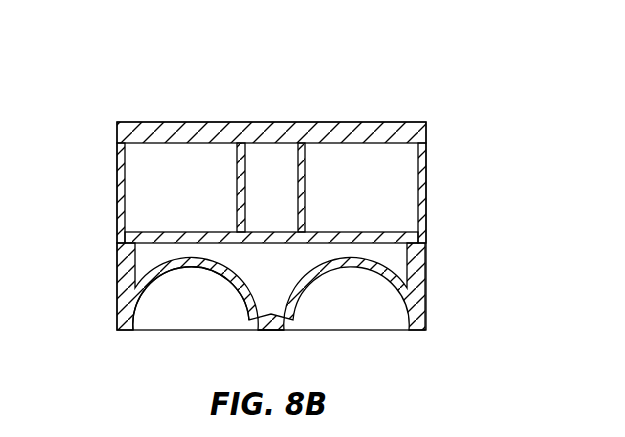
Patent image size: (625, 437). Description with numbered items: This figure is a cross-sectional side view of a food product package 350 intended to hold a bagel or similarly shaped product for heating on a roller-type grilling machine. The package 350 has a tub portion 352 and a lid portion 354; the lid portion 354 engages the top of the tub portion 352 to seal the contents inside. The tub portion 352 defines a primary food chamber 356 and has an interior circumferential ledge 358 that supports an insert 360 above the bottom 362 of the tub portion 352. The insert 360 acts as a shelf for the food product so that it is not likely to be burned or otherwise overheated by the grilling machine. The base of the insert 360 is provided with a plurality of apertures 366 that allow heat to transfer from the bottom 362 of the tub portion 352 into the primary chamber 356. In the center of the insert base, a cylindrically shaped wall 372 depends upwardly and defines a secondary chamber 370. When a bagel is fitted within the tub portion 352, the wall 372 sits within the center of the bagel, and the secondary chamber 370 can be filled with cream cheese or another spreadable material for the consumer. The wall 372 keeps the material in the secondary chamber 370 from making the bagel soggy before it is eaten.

The food product package 350 is at (465, 204).
The tub portion 352 is at (420, 277).
The lid portion 354 is at (360, 122).
The primary food chamber 356 is at (153, 168).
The interior circumferential ledge 358 is at (420, 247).
The insert 360 is at (322, 233).
The bottom 362 is at (193, 267).
The apertures 366 is at (380, 240).
The secondary chamber 370 is at (285, 247).
The cylindrically shaped wall 372 is at (237, 177).